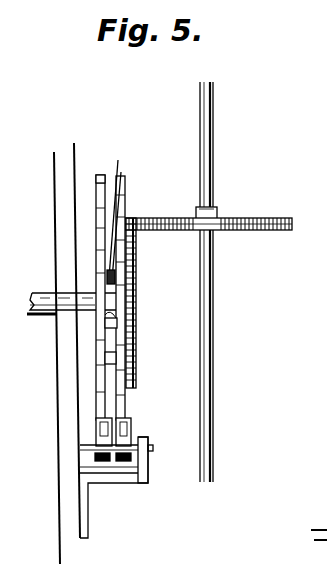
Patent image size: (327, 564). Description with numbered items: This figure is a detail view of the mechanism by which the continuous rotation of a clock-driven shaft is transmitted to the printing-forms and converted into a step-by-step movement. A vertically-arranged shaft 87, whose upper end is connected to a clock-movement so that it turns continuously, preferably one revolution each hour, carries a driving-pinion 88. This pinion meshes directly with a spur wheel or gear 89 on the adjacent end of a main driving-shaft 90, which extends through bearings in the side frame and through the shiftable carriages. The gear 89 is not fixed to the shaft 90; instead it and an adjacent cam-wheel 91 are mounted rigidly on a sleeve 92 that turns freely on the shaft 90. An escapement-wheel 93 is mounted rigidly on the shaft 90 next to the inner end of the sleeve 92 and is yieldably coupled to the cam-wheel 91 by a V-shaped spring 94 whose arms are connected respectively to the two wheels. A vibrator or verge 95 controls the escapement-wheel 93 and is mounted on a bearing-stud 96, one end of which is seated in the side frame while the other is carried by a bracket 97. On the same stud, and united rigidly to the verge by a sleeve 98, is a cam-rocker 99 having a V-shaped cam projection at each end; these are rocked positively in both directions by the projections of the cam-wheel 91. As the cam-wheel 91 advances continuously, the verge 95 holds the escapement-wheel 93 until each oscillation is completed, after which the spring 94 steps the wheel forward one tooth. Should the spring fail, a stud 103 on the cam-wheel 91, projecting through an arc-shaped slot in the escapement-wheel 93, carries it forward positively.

The vertically-arranged shaft 87 is at (218, 99).
The driving-pinion 88 is at (280, 218).
The spur wheel or gear 89 is at (137, 272).
The main driving-shaft 90 is at (41, 297).
The cam-wheel 91 is at (125, 208).
The sleeve 92 is at (110, 322).
The escapement-wheel 93 is at (96, 184).
The V-shaped spring 94 is at (118, 167).
The vibrator or verge 95 is at (104, 464).
The bearing-stud 96 is at (150, 451).
The bracket 97 is at (132, 483).
The sleeve 98 is at (134, 443).
The cam-rocker 99 is at (142, 418).
The stud 103 is at (108, 362).